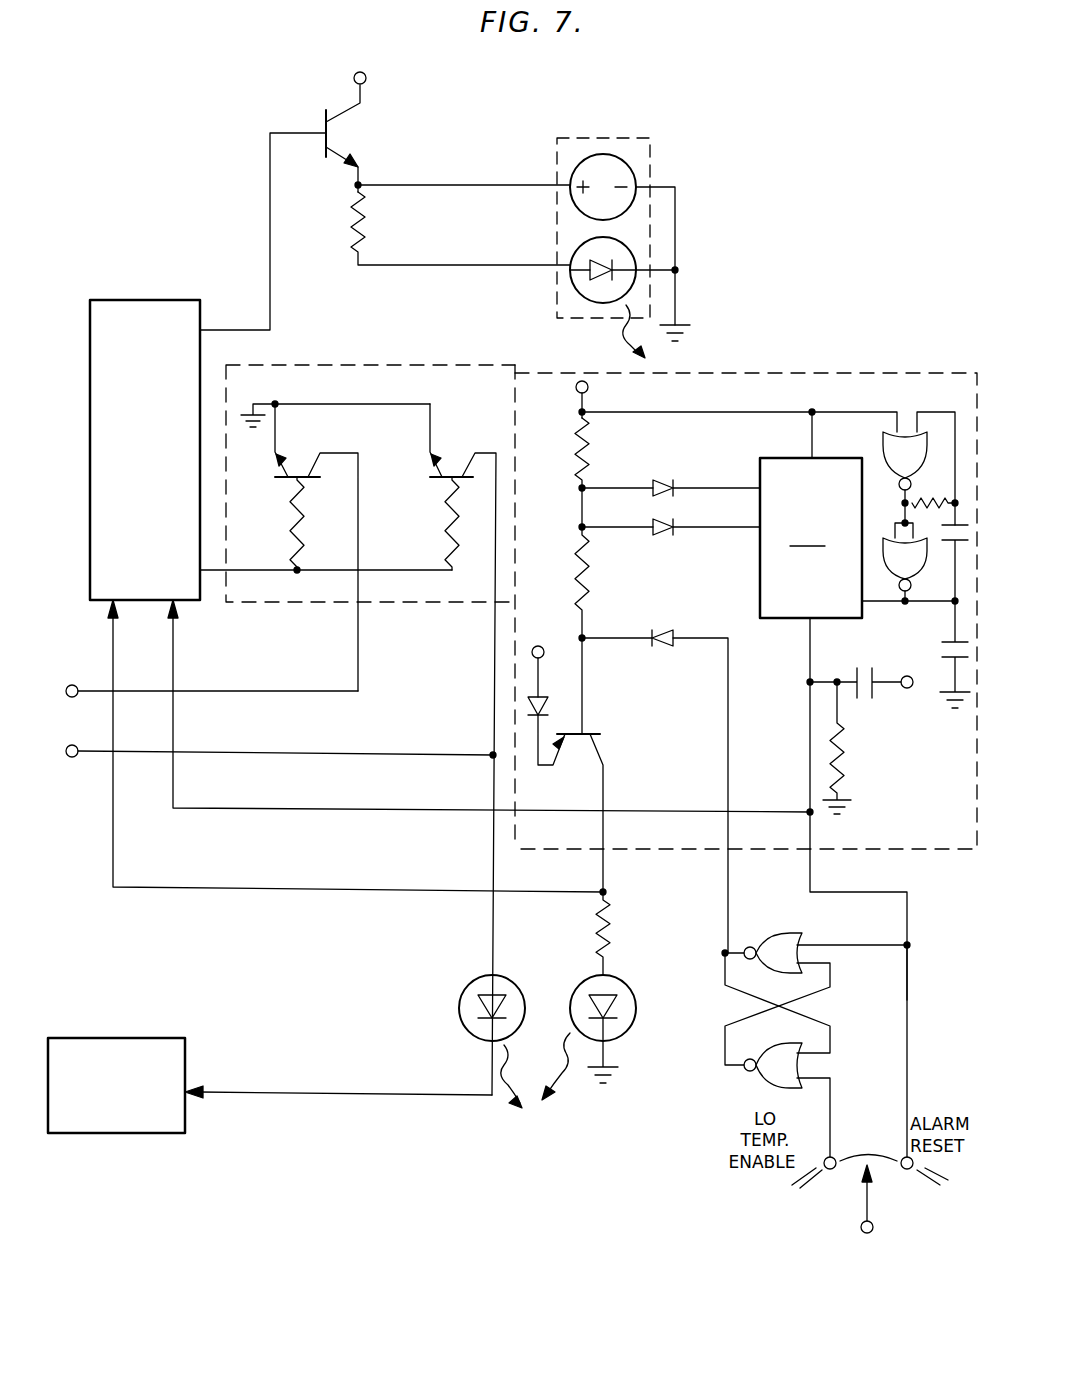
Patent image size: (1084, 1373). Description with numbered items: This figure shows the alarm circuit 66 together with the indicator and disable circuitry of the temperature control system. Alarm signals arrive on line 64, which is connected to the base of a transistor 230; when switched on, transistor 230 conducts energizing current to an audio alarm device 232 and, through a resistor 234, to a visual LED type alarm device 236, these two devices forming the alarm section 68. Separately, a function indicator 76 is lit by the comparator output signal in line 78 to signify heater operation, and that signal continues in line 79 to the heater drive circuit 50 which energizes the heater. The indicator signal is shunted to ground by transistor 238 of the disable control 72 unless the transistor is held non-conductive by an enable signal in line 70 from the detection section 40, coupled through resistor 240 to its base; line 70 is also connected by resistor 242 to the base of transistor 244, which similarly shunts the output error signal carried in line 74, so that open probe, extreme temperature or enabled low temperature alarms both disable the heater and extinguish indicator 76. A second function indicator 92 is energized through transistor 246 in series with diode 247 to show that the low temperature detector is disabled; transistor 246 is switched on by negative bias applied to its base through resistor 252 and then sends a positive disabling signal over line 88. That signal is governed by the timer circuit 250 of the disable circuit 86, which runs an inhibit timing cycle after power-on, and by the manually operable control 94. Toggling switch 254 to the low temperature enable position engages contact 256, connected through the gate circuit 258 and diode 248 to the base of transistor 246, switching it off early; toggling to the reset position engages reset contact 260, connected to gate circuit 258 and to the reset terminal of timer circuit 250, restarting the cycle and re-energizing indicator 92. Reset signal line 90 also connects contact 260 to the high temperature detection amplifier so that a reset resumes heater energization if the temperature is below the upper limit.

The detection section 40 is at (138, 305).
The heater drive circuit 50 is at (178, 1040).
The alarm signal line 64 is at (270, 200).
The alarm circuit 66 is at (367, 117).
The alarm section 68 is at (607, 219).
The disable control line 70 is at (441, 575).
The disable control 72 is at (374, 357).
The error signal line 74 is at (299, 691).
The function indicator 76 is at (512, 982).
The output signal line 78 is at (299, 752).
The heater drive signal line 79 is at (314, 1090).
The disable circuit 86 is at (897, 356).
The disable signal line 88 is at (366, 888).
The reset signal line 90 is at (380, 808).
The low temperature disable indicator 92 is at (625, 982).
The manually operable control 94 is at (924, 992).
The transistor 230 is at (326, 117).
The audio alarm device 232 is at (630, 176).
The resistor 234 is at (360, 250).
The visual LED alarm device 236 is at (575, 258).
The transistor 238 is at (451, 450).
The resistor 240 is at (448, 522).
The resistor 242 is at (306, 530).
The transistor 244 is at (303, 458).
The transistor 246 is at (573, 750).
The diode 247 is at (545, 702).
The diode 248 is at (665, 628).
The timer circuit 250 is at (811, 538).
The resistor 252 is at (587, 585).
The switch 254 is at (866, 1192).
The low temperature enable contact 256 is at (800, 1186).
The gate circuit 258 is at (733, 1094).
The reset contact 260 is at (927, 1186).